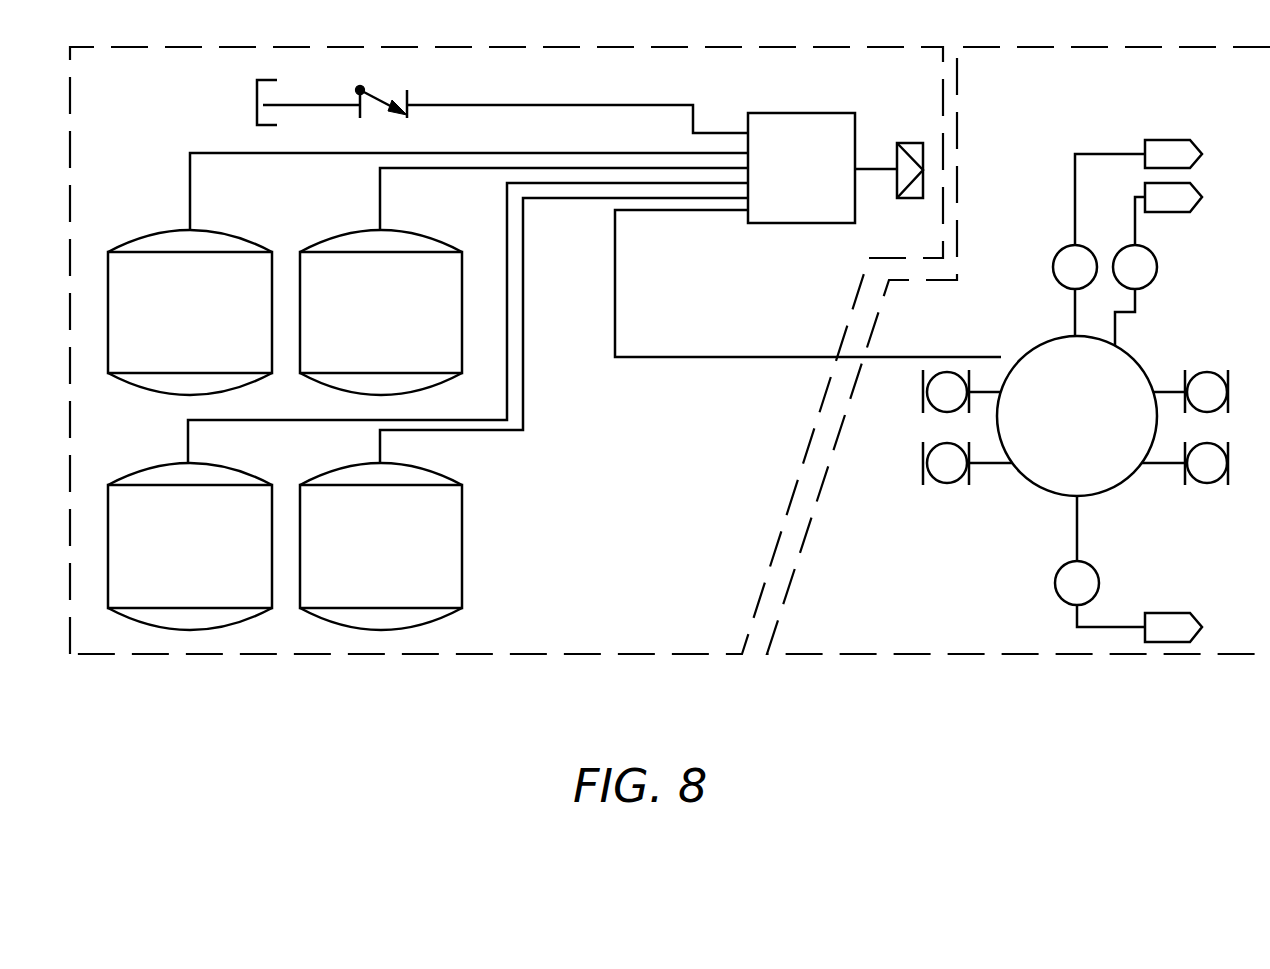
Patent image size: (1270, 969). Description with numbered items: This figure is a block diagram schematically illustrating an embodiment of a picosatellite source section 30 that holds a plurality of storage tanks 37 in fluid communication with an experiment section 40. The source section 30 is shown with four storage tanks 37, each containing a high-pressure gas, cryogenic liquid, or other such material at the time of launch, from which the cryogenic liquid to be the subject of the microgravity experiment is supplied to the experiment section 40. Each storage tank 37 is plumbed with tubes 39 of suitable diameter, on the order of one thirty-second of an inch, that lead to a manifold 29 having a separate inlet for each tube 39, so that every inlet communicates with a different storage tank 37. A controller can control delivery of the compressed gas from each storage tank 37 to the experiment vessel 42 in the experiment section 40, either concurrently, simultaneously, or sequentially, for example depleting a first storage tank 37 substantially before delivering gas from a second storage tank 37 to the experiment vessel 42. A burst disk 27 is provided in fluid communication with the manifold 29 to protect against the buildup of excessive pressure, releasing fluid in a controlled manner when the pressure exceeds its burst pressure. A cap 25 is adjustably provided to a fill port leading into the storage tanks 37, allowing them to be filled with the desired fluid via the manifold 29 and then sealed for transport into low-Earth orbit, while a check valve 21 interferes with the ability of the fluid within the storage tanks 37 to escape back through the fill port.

The check valve 21 is at (410, 90).
The cap 25 is at (257, 99).
The burst disk 27 is at (910, 140).
The manifold 29 is at (838, 225).
The source section 30 is at (696, 640).
The storage tanks 37 is at (462, 523).
The tubes 39 is at (507, 403).
The experiment section 40 is at (836, 644).
The experiment vessel 42 is at (1030, 487).